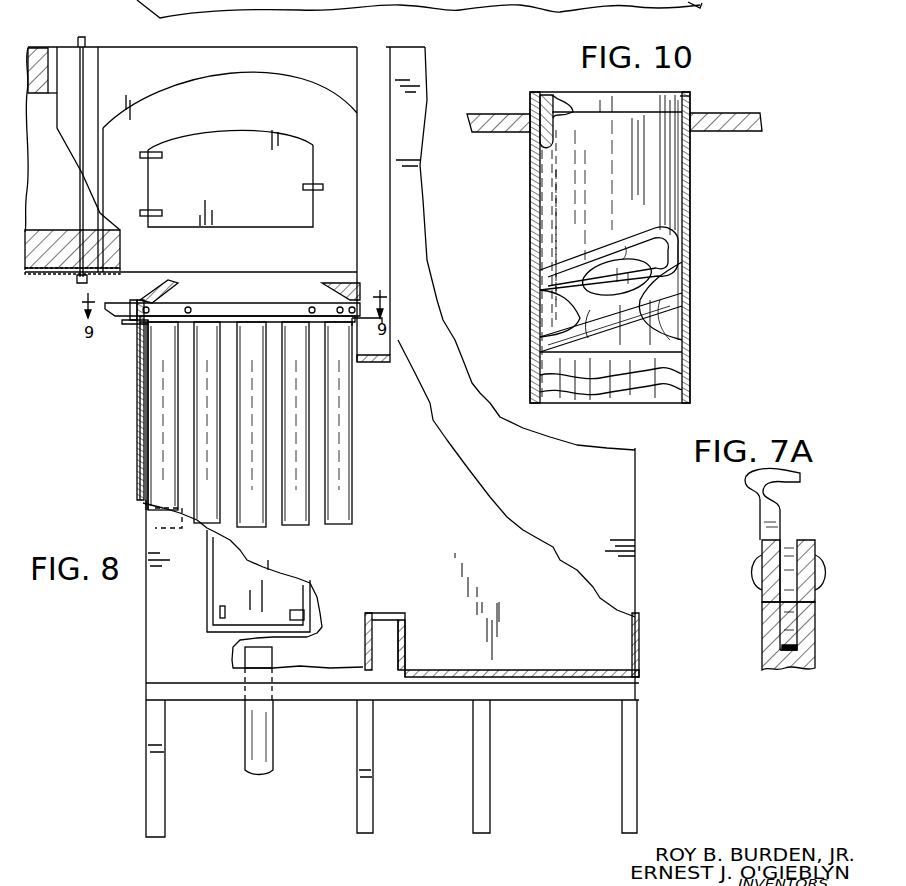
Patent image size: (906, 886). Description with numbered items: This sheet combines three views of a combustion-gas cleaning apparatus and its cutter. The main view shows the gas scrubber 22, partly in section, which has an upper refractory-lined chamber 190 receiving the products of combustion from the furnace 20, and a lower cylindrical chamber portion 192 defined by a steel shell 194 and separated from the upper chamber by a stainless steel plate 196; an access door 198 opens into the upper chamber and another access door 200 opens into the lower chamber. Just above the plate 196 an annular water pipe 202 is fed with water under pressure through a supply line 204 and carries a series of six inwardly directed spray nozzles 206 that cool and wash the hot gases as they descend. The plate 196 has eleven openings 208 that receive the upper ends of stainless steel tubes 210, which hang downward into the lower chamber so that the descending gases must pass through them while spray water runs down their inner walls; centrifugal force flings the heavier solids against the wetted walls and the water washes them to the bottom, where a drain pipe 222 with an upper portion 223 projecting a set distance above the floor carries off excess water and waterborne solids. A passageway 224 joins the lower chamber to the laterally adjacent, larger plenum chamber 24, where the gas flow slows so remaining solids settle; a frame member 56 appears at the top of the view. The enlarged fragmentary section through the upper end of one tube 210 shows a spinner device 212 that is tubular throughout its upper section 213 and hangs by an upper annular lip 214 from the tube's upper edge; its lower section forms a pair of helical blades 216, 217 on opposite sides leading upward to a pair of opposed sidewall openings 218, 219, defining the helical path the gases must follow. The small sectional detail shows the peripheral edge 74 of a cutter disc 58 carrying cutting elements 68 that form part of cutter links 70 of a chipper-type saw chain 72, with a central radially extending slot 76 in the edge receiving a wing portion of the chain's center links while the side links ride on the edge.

In FIG. 8, the furnace 20 is at (53, 46).
In FIG. 8, the gas scrubber 22 is at (137, 465).
In FIG. 8, the plenum chamber 24 is at (641, 549).
In FIG. 8, the frame member 56 is at (702, 5).
In FIG. 7A, the disc 58 is at (764, 668).
In FIG. 7A, the cutting elements 68 is at (785, 482).
In FIG. 7A, the cutter links 70 is at (762, 550).
In FIG. 7A, the saw chain 72 is at (820, 550).
In FIG. 7A, the peripheral edge 74 is at (762, 596).
In FIG. 7A, the slot 76 is at (780, 625).
In FIG. 8, the upper refractory-lined chamber 190 is at (72, 275).
In FIG. 8, the lower cylindrical chamber portion 192 is at (148, 373).
In FIG. 8, the steel shell 194 is at (140, 400).
In FIG. 8, the stainless steel plate 196 is at (187, 322).
In FIG. 10, the stainless steel plate 196 is at (734, 107).
In FIG. 8, the access door 198 is at (237, 125).
In FIG. 8, the access door 200 is at (222, 590).
In FIG. 8, the annular water pipe 202 is at (243, 299).
In FIG. 8, the supply line 204 is at (132, 305).
In FIG. 8, the spray nozzles 206 is at (166, 308).
In FIG. 10, the openings 208 is at (542, 112).
In FIG. 8, the stainless steel tubes 210 is at (202, 420).
In FIG. 10, the stainless steel tubes 210 is at (692, 262).
In FIG. 10, the spinner device 212 is at (675, 214).
In FIG. 10, the upper section 213 is at (560, 200).
In FIG. 10, the upper annular lip 214 is at (686, 98).
In FIG. 10, the helical blade 216 is at (585, 328).
In FIG. 10, the helical blade 217 is at (692, 322).
In FIG. 10, the sidewall opening 218 is at (640, 238).
In FIG. 10, the sidewall opening 219 is at (612, 260).
In FIG. 8, the drain pipe 222 is at (274, 733).
In FIG. 8, the upper portion 223 is at (273, 657).
In FIG. 8, the passageway 224 is at (406, 633).